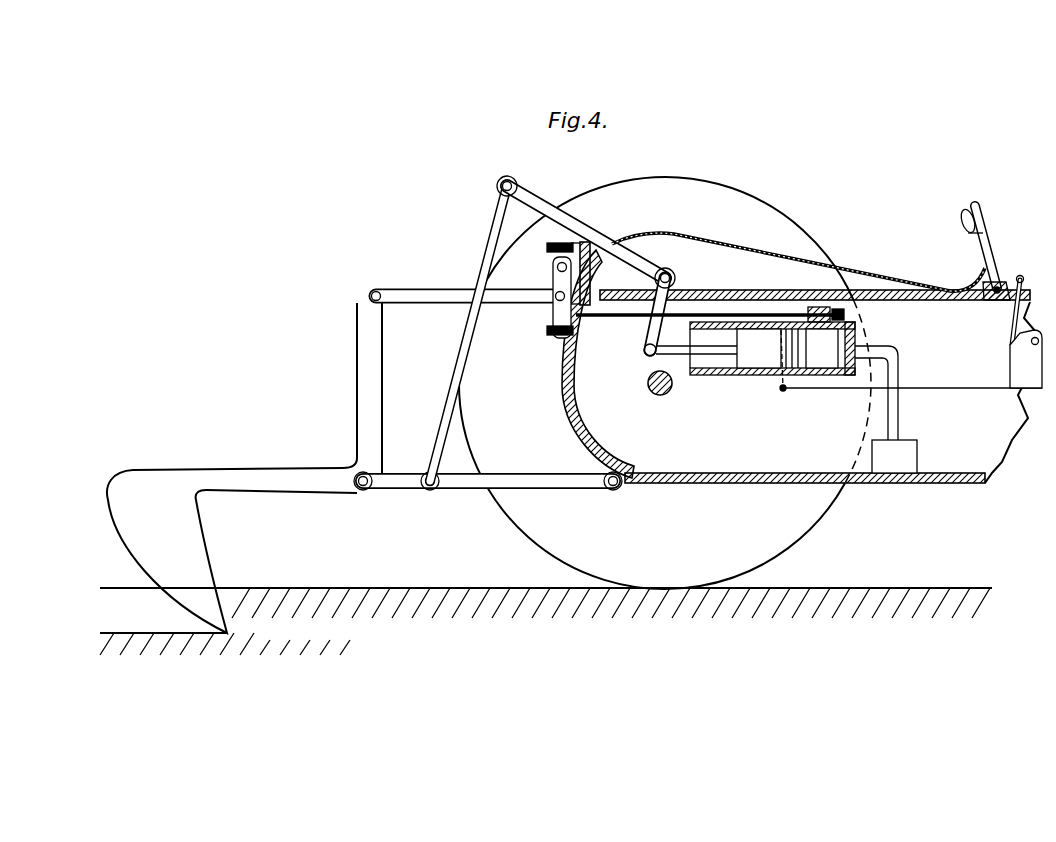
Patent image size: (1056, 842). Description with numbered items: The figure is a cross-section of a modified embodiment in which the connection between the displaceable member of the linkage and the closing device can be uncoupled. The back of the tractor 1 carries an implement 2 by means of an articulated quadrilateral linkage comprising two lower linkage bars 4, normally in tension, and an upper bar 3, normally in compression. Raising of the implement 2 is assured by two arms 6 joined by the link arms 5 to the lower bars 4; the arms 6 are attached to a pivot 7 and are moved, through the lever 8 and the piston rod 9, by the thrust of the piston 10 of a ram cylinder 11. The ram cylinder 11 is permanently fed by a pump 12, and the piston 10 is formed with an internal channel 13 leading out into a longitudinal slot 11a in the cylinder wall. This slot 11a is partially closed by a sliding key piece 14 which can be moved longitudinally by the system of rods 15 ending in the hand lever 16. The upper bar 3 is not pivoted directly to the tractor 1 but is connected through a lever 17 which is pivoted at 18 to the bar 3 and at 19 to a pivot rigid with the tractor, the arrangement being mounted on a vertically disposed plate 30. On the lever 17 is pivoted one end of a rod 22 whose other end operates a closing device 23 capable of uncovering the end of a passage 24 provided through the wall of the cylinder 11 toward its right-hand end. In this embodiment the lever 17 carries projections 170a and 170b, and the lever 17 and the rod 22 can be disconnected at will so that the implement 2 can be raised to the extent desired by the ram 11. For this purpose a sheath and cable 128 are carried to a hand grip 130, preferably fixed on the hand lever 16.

The tractor 1 is at (898, 483).
The implement 2 is at (178, 543).
The upper bar 3 is at (434, 300).
The lower linkage bars 4 is at (500, 484).
The link arms 5 is at (489, 236).
The arms 6 is at (583, 240).
The pivot 7 is at (672, 272).
The lever 8 is at (636, 346).
The piston rod 9 is at (704, 377).
The piston 10 is at (768, 360).
The ram cylinder 11 is at (818, 378).
The longitudinal slot 11a is at (758, 376).
The pump 12 is at (903, 451).
The internal channel 13 is at (784, 352).
The sliding key piece 14 is at (786, 392).
The system of rods 15 is at (1012, 328).
The hand lever 16 is at (961, 221).
The lever 17 is at (552, 320).
The pivot 18 is at (554, 296).
The pivot 19 is at (556, 268).
The rod 22 is at (745, 312).
The closing device 23 is at (820, 306).
The passage 24 is at (866, 334).
The plate 30 is at (594, 254).
The cable 128 is at (852, 270).
The hand grip 130 is at (1003, 249).
The projection 170a is at (552, 336).
The projection 170b is at (547, 248).